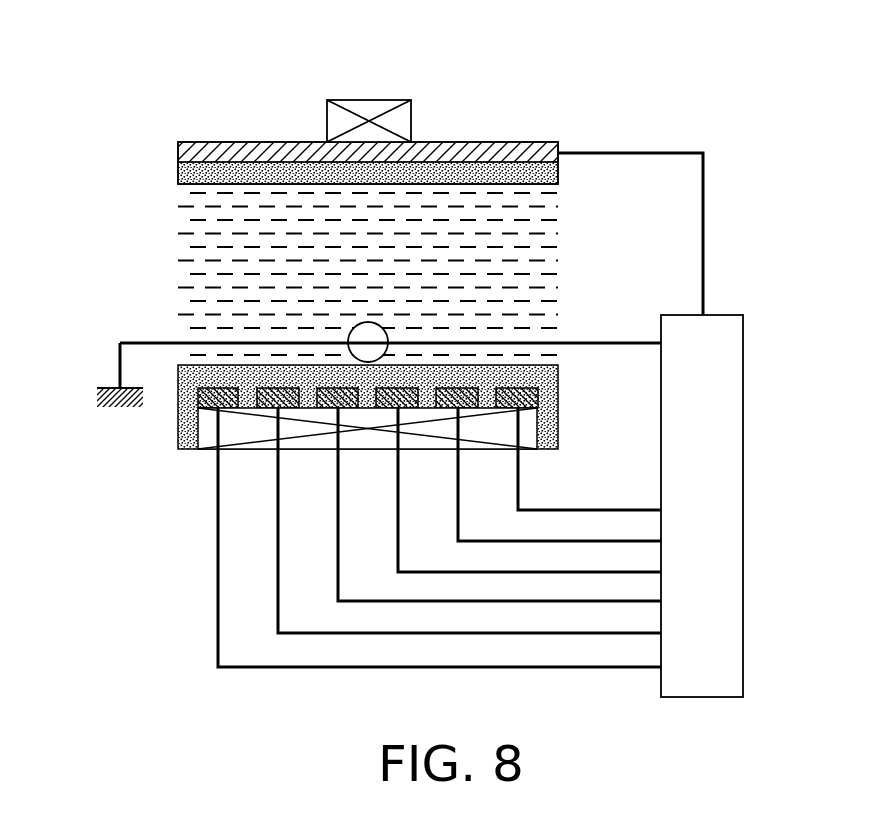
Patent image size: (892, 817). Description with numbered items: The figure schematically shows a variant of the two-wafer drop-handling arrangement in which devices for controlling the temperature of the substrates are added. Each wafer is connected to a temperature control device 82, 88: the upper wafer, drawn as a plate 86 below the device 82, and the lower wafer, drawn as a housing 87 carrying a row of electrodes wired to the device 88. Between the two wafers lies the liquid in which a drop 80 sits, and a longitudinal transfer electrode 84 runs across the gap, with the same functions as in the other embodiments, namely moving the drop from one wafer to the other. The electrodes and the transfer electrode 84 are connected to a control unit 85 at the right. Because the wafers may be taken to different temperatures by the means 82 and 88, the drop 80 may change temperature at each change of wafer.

The sample 80 is at (378, 328).
The temperature control device 82 is at (372, 108).
The longitudinal transfer electrode 84 is at (172, 343).
The controller 85 is at (741, 332).
The plate 86 is at (196, 175).
The housing 87 is at (178, 390).
The temperature control device 88 is at (247, 437).